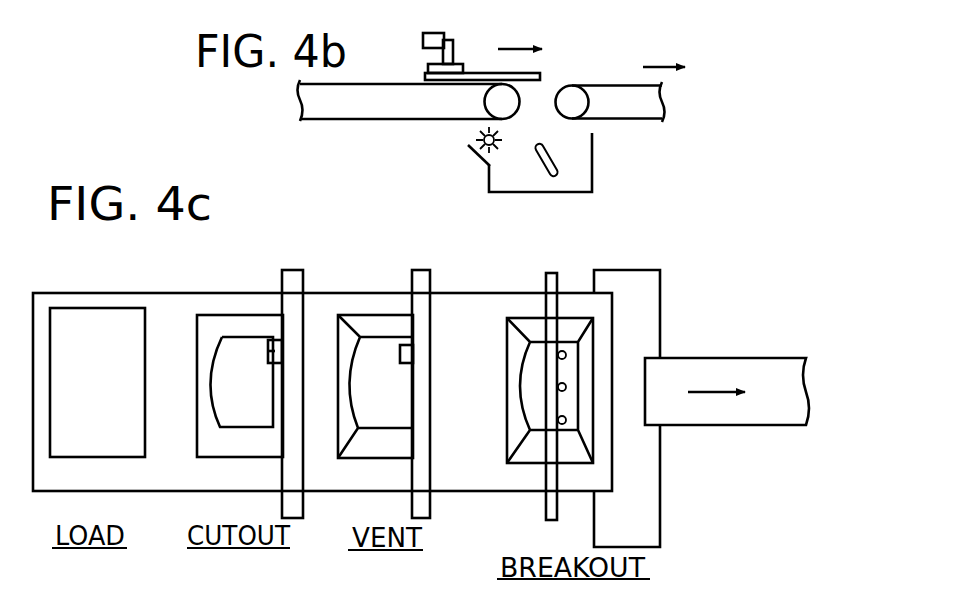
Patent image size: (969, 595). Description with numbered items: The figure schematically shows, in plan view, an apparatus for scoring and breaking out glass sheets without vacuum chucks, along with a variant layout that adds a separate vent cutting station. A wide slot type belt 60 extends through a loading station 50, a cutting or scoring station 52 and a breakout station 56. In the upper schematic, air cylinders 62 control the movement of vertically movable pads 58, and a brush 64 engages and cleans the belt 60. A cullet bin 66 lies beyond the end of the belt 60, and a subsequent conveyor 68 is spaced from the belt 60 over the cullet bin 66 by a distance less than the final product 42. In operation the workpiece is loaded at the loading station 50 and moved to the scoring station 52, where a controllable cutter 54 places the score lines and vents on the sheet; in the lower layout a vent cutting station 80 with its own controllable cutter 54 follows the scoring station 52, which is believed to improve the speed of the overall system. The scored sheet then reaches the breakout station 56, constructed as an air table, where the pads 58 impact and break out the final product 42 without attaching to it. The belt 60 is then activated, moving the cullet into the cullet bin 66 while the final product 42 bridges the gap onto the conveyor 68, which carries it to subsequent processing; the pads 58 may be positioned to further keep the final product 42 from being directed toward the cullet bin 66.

In FIG. 4b, the final product 42 is at (540, 73).
In FIG. 4c, the loading station 50 is at (102, 290).
In FIG. 4c, the scoring station 52 is at (186, 499).
In FIG. 4c, the controllable cutter 54 is at (272, 343).
In FIG. 4c, the breakout station 56 is at (530, 290).
In FIG. 4b, the vertically movable pads 58 is at (426, 72).
In FIG. 4c, the vertically movable pads 58 is at (566, 351).
In FIG. 4b, the belt 60 is at (415, 119).
In FIG. 4c, the belt 60 is at (165, 291).
In FIG. 4b, the air cylinders 62 is at (455, 40).
In FIG. 4b, the brush 64 is at (478, 157).
In FIG. 4c, the cullet bin 66 is at (660, 285).
In FIG. 4b, the conveyor 68 is at (628, 85).
In FIG. 4c, the conveyor 68 is at (785, 372).
In FIG. 4c, the vent cutting station 80 is at (346, 499).